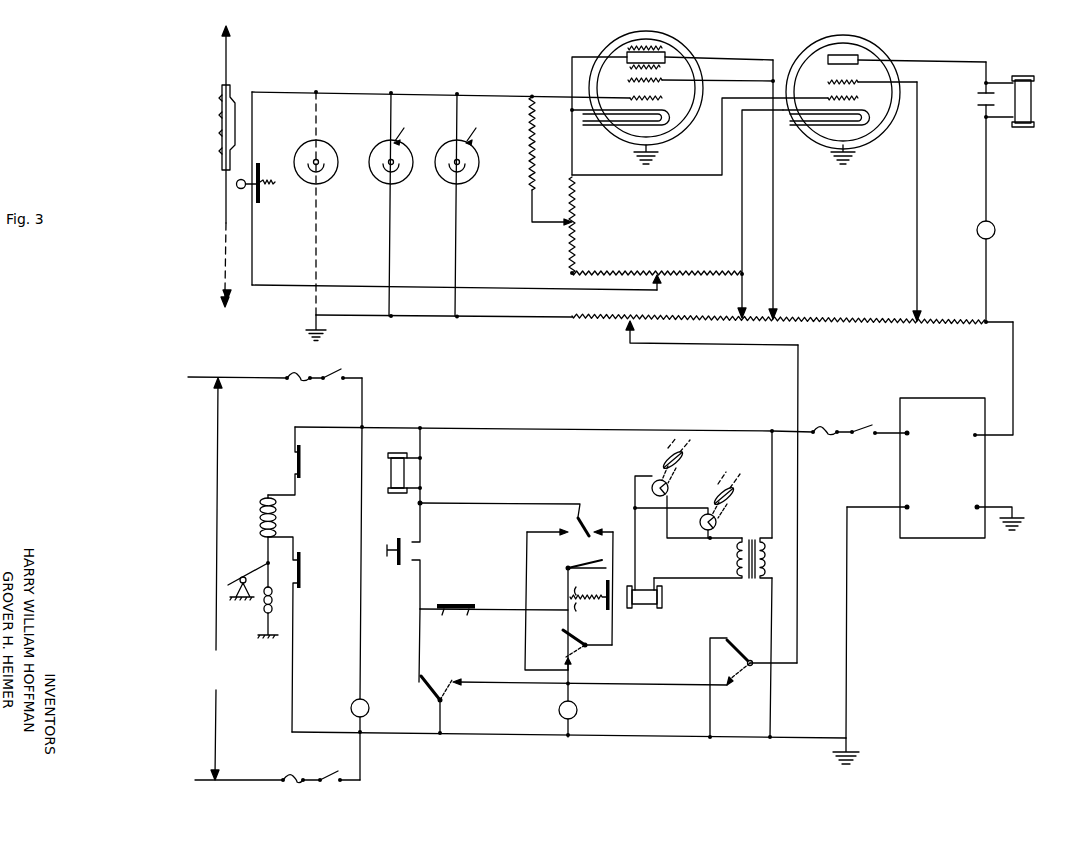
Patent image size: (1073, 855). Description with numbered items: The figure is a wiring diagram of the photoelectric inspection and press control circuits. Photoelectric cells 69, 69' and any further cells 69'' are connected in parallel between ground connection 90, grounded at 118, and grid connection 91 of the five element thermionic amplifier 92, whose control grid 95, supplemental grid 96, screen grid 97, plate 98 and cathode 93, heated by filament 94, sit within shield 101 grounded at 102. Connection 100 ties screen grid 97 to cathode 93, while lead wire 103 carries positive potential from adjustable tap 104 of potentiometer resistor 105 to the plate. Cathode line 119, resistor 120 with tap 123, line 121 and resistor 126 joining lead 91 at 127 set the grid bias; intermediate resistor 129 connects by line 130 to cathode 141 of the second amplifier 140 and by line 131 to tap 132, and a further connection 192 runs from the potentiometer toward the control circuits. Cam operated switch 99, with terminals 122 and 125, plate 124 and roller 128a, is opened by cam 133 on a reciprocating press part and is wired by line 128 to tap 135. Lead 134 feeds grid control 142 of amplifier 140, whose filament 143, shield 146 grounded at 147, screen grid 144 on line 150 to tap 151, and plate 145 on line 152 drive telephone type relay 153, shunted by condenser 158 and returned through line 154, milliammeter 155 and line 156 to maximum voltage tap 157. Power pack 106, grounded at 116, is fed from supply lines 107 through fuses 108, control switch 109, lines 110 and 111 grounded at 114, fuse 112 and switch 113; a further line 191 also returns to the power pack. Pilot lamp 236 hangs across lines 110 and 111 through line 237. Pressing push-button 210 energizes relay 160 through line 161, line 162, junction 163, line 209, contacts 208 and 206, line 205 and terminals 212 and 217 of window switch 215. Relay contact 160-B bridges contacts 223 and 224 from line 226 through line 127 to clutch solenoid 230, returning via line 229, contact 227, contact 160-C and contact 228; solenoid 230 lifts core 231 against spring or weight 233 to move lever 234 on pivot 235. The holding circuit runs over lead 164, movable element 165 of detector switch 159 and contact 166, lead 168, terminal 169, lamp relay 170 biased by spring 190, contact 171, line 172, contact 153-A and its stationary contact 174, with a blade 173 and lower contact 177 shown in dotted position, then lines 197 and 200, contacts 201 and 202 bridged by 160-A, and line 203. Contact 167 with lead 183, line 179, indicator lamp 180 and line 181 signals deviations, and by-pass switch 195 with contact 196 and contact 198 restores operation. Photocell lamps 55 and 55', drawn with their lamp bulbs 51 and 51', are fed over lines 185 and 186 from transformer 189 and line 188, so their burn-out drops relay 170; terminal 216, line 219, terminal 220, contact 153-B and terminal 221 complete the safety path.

The cam 133 is at (232, 92).
The roller 128a is at (236, 184).
The grid connection 91 is at (253, 108).
The line 128 is at (356, 280).
The ground 118 is at (318, 326).
The ground connection 90 is at (417, 324).
The photoelectric cell 69'' is at (325, 170).
The photoelectric cell 69 is at (409, 204).
The photocell 69' is at (478, 205).
The cam operated switch 99 is at (258, 164).
The terminal 122 is at (252, 158).
The switch plate 124 is at (261, 170).
The terminal 125 is at (257, 196).
The line 121 is at (534, 152).
The connection point 127 is at (533, 92).
The resistor 126 is at (531, 158).
The intermediate tap 123 is at (577, 224).
The connection 100 is at (571, 71).
The lead wire 103 is at (775, 212).
The adjustable tap 104 is at (776, 310).
The grid controlled thermionic amplifier 92 is at (678, 125).
The shield 101 is at (686, 116).
The plate 98 is at (668, 54).
The screen grid 97 is at (656, 45).
The supplemental grid 96 is at (667, 78).
The control grid 95 is at (662, 98).
The cathode 93 is at (661, 126).
The alternating current filament 94 is at (624, 128).
The ground 102 is at (640, 157).
The lead 134 is at (668, 176).
The resistor 120 is at (575, 240).
The intermediate resistor 129 is at (648, 256).
The line 119 is at (570, 284).
The intermediate tap 135 is at (661, 281).
The line 130 is at (740, 243).
The line 131 is at (744, 283).
The tap 132 is at (739, 313).
The potentiometer resistor 105 is at (836, 324).
The conductor 192 is at (626, 329).
The shield 146 is at (891, 118).
The thermionic amplifier 140 is at (866, 133).
The plate 145 is at (860, 53).
The screen grid 144 is at (862, 80).
The grid control 142 is at (816, 106).
The cathode 141 is at (872, 124).
The filament 143 is at (812, 126).
The ground 147 is at (850, 162).
The line 150 is at (919, 172).
The tap 151 is at (918, 316).
The line 152 is at (968, 42).
The line 154 is at (988, 155).
The condenser 158 is at (975, 94).
The relay 153 is at (1030, 82).
The milliammeter 155 is at (995, 230).
The line 156 is at (988, 268).
The maximum voltage tap 157 is at (980, 340).
The alternating current supply lines 107 is at (242, 386).
The fuses 108 is at (297, 569).
The control switch 109 is at (343, 362).
The line 110 is at (364, 400).
The line 111 is at (362, 757).
The ground 114 is at (848, 741).
The power pack fuse 112 is at (822, 437).
The switch 113 is at (860, 437).
The power pack 106 is at (979, 467).
The ground 116 is at (1013, 508).
The conductor 191 is at (799, 508).
The line 226 is at (296, 438).
The contact 160-B is at (301, 462).
The contact 223 is at (296, 452).
The contact 224 is at (296, 476).
The movable core 231 is at (267, 496).
The clutch solenoid 230 is at (283, 523).
The line 229 is at (296, 540).
The movable contact 160-C is at (301, 569).
The contact 227 is at (296, 562).
The stationary contact 228 is at (296, 583).
The pivot 235 is at (238, 584).
The lever 234 is at (262, 572).
The spring or weight 233 is at (263, 606).
The pilot lamp 236 is at (352, 703).
The line 237 is at (362, 655).
The line 161 is at (421, 445).
The relay 160 is at (409, 470).
The line 162 is at (421, 498).
The junction 163 is at (422, 506).
The lead 164 is at (527, 504).
The push button contact 208 is at (411, 542).
The push-button 210 is at (395, 538).
The line 209 is at (422, 533).
The push button contact 206 is at (412, 561).
The line 205 is at (419, 592).
The line 200 is at (500, 618).
The contact 160-A is at (462, 604).
The line 203 is at (429, 608).
The contact 202 is at (437, 622).
The contact 201 is at (467, 622).
The terminal 212 is at (423, 678).
The movable element 217 is at (438, 683).
The window switch 215 is at (445, 695).
The terminal 216 is at (460, 675).
The line 219 is at (662, 684).
The stationary contact 167 is at (566, 530).
The movable element 165 is at (590, 530).
The mechanical detector switch 159 is at (581, 516).
The stationary contact 166 is at (593, 534).
The lead 168 is at (626, 555).
The terminal 169 is at (610, 583).
The by-pass switch 195 is at (580, 566).
The contact 196 is at (597, 570).
The line 197 is at (567, 570).
The contact 198 is at (609, 571).
The lead 183 is at (526, 555).
The spring 190 is at (587, 634).
The contact 171 is at (610, 599).
The line 172 is at (614, 647).
The contact 153-A is at (578, 642).
The stationary contact 174 is at (565, 631).
The blade 173 is at (568, 640).
The contact 177 is at (564, 659).
The line 179 is at (570, 677).
The indicator lamp 180 is at (558, 708).
The line 181 is at (565, 724).
The lamp 55' is at (688, 533).
The photocell lamp 51' is at (702, 460).
The lamp 55 is at (688, 523).
The photocell lamp 51 is at (737, 495).
The line 186 is at (636, 532).
The lamp relay 170 is at (662, 597).
The line 185 is at (741, 548).
The line 188 is at (698, 573).
The transformer 189 is at (762, 580).
The terminal 221 is at (740, 632).
The contact 153-B is at (762, 651).
The terminal 220 is at (730, 685).